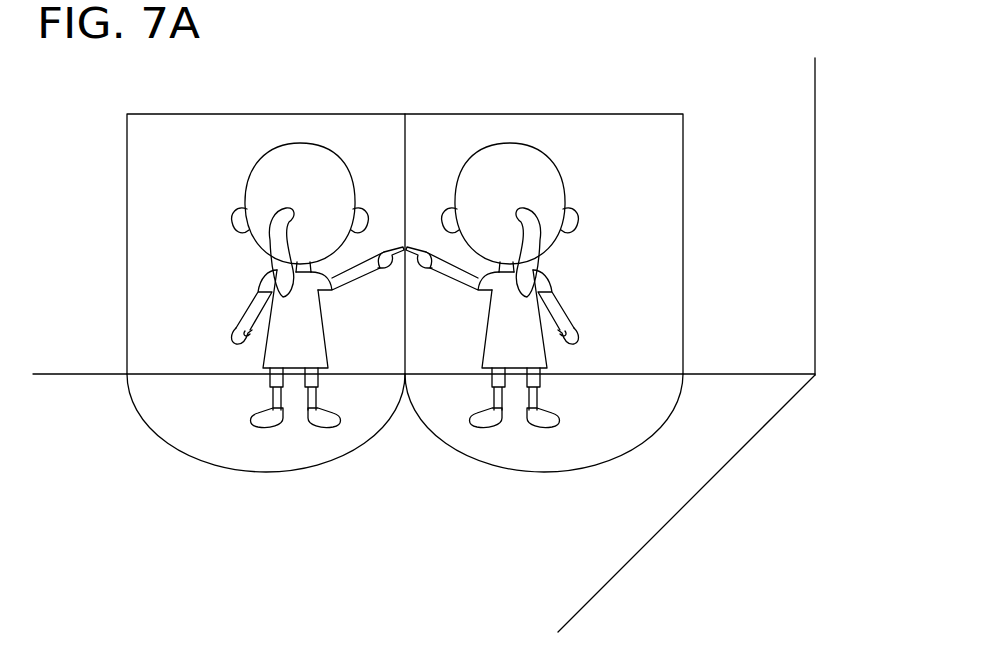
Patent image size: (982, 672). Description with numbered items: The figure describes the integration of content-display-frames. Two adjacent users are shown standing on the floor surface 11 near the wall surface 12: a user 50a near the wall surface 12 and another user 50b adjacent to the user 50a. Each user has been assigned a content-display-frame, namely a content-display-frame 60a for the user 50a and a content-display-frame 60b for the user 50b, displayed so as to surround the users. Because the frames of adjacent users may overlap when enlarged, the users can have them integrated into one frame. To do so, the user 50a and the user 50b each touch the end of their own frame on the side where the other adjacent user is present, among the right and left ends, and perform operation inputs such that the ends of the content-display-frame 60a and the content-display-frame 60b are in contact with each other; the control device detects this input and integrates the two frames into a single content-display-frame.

The user 50a is at (261, 150).
The content-display-frame 60a is at (264, 122).
The user 50b is at (549, 150).
The content-display-frame 60b is at (546, 122).
The wall surface 12 is at (787, 208).
The floor surface 11 is at (658, 502).